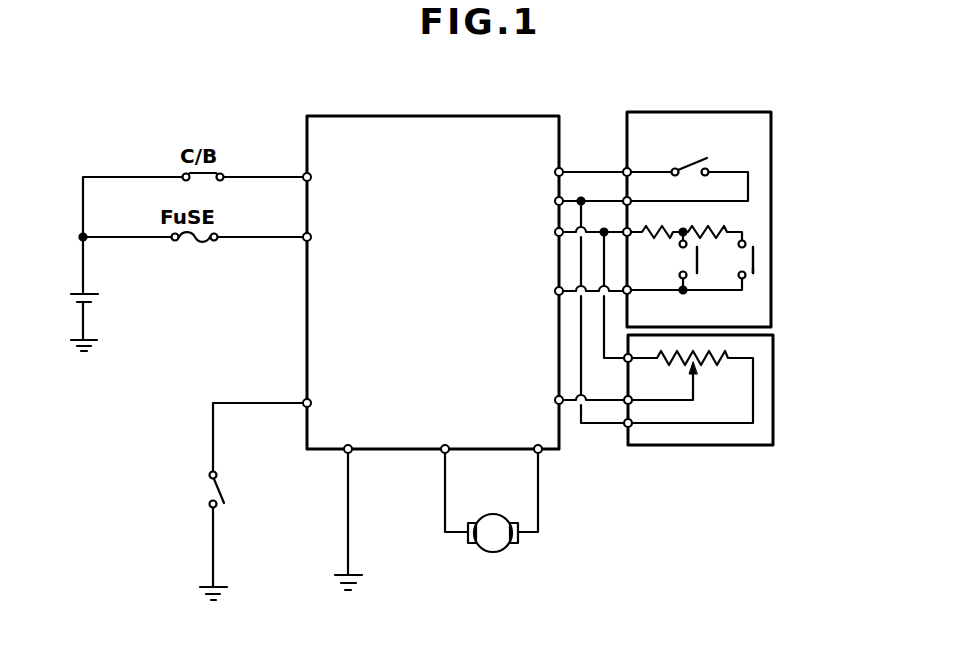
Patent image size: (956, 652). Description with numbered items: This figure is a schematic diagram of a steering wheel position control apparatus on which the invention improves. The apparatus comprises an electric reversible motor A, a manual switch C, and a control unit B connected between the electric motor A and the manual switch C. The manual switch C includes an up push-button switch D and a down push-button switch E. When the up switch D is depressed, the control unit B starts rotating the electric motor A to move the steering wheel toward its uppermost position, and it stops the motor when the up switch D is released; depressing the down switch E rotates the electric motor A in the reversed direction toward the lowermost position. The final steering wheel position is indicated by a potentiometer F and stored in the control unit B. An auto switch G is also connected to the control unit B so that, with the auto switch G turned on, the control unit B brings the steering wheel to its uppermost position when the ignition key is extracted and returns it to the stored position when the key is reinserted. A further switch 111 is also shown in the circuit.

The electric reversible motor A is at (506, 520).
The control unit B is at (490, 116).
The manual switch C is at (757, 273).
The up push-button switch D is at (698, 262).
The down push-button switch E is at (754, 253).
The potentiometer F is at (773, 430).
The auto switch G is at (745, 157).
The switch 111 is at (205, 487).